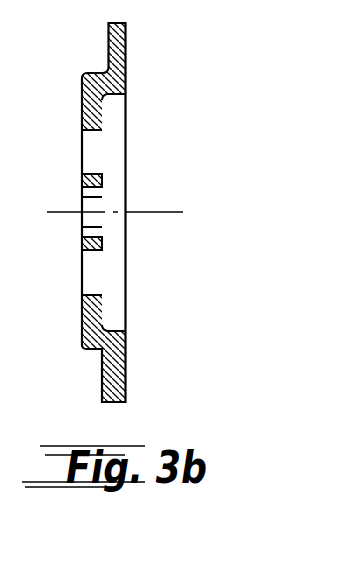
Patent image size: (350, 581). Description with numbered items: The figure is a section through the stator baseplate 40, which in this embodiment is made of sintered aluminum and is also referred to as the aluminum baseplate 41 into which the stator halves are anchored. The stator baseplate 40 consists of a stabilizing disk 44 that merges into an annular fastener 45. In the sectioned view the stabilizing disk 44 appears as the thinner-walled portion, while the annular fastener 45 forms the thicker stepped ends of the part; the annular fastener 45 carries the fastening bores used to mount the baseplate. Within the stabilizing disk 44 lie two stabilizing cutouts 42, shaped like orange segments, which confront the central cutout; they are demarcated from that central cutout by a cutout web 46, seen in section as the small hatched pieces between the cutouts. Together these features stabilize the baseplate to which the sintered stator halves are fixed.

The stator baseplate 40 is at (122, 23).
The aluminum baseplate 41 is at (163, 106).
The stabilizing cutouts 42 is at (92, 155).
The stabilizing disk 44 is at (81, 306).
The annular fastener 45 is at (113, 391).
The cutout web 46 is at (98, 179).